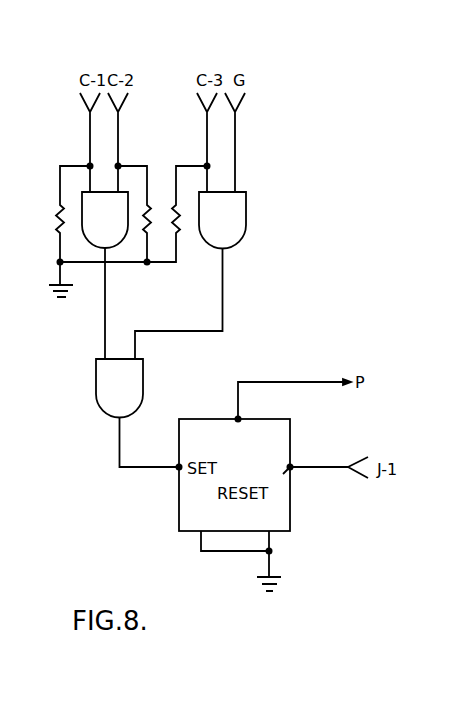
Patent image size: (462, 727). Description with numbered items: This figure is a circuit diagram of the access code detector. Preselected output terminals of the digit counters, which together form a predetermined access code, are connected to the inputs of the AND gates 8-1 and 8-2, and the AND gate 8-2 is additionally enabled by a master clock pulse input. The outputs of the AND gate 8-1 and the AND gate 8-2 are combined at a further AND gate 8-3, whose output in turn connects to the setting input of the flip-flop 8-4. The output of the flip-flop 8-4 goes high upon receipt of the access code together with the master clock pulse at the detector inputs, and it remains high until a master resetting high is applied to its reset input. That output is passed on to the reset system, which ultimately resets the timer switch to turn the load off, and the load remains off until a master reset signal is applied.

The AND gate 8-1 is at (105, 220).
The AND gate 8-2 is at (222, 220).
The AND gate 8-3 is at (95, 371).
The flip-flop 8-4 is at (222, 419).